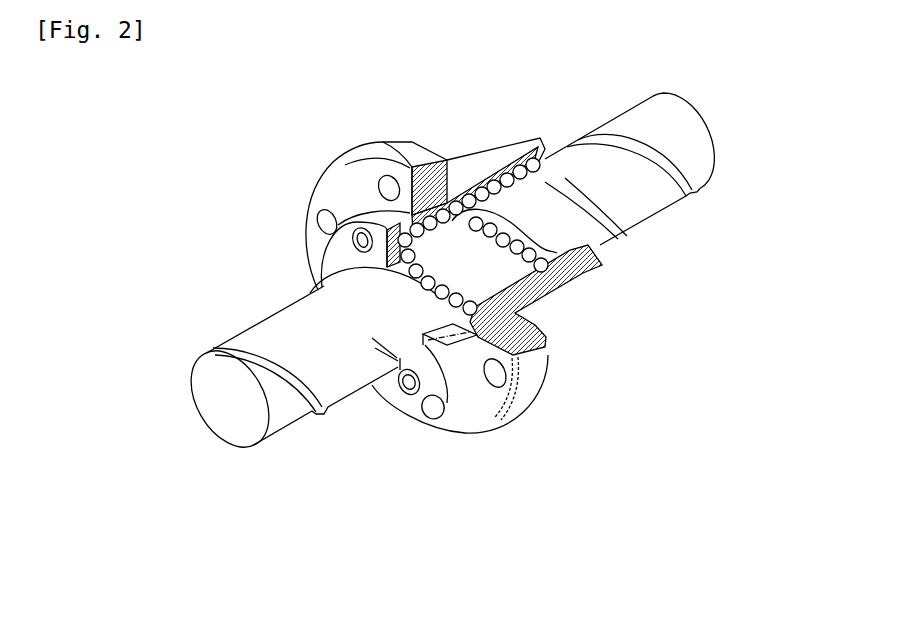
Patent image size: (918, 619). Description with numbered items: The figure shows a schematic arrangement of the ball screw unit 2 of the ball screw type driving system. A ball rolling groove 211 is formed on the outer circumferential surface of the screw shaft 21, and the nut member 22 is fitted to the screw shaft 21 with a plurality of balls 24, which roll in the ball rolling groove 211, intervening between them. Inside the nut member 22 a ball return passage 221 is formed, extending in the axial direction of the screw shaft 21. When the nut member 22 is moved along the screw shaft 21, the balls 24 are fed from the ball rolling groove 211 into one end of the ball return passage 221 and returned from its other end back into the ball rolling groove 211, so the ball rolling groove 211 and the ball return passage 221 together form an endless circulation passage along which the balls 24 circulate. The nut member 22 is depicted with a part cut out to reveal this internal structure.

The ball screw unit 2 is at (298, 142).
The screw shaft 21 is at (257, 321).
The ball rolling groove 211 is at (612, 216).
The nut member 22 is at (537, 396).
The ball return passage 221 is at (541, 150).
The balls 24 is at (500, 234).